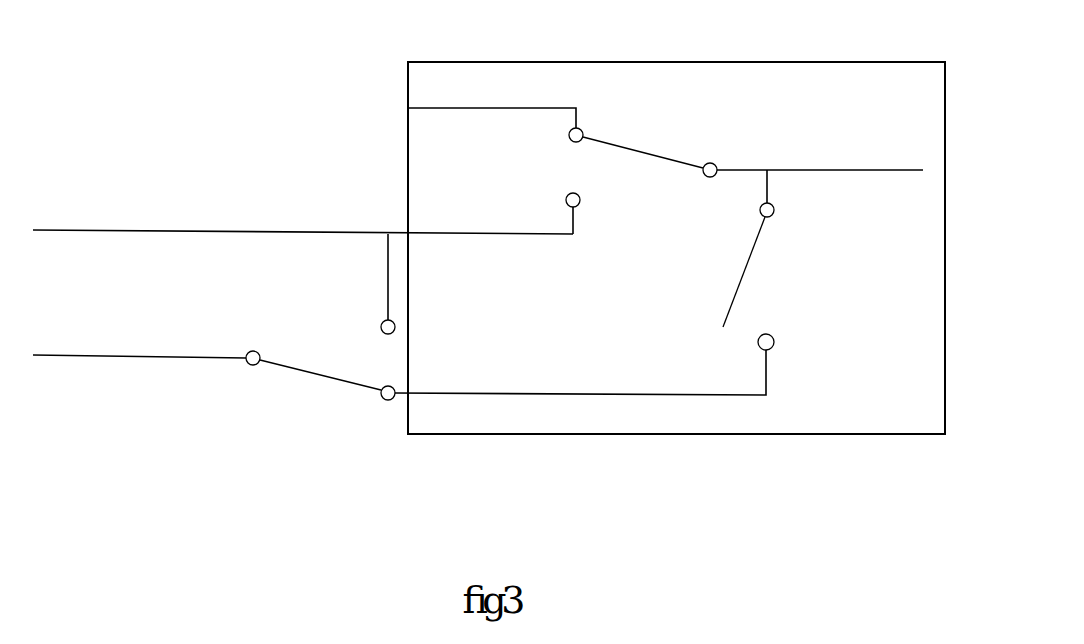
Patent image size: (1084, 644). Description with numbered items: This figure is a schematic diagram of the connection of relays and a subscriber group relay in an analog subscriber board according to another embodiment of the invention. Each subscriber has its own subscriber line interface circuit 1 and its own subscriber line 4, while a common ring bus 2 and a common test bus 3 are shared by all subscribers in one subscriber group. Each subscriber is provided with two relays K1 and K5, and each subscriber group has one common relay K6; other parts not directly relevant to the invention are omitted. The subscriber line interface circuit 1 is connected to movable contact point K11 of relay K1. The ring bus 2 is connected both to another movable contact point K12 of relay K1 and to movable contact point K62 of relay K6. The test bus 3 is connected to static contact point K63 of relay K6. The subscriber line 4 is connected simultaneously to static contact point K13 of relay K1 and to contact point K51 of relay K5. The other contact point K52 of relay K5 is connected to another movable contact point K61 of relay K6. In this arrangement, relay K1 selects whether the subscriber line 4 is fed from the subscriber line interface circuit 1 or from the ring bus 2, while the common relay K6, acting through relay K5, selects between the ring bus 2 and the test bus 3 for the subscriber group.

The subscriber line interface circuit 1 is at (613, 248).
The ring bus 2 is at (303, 209).
The test bus 3 is at (139, 335).
The subscriber line 4 is at (820, 143).
The relay K1 is at (582, 171).
The movable contact point K11 is at (594, 128).
The movable contact point K12 is at (592, 194).
The static contact point K13 is at (729, 162).
The relay K5 is at (617, 282).
The contact point K51 is at (790, 215).
The contact point K52 is at (788, 328).
The common relay K6 is at (308, 329).
The movable contact point K61 is at (376, 383).
The movable contact point K62 is at (376, 318).
The static contact point K63 is at (241, 348).